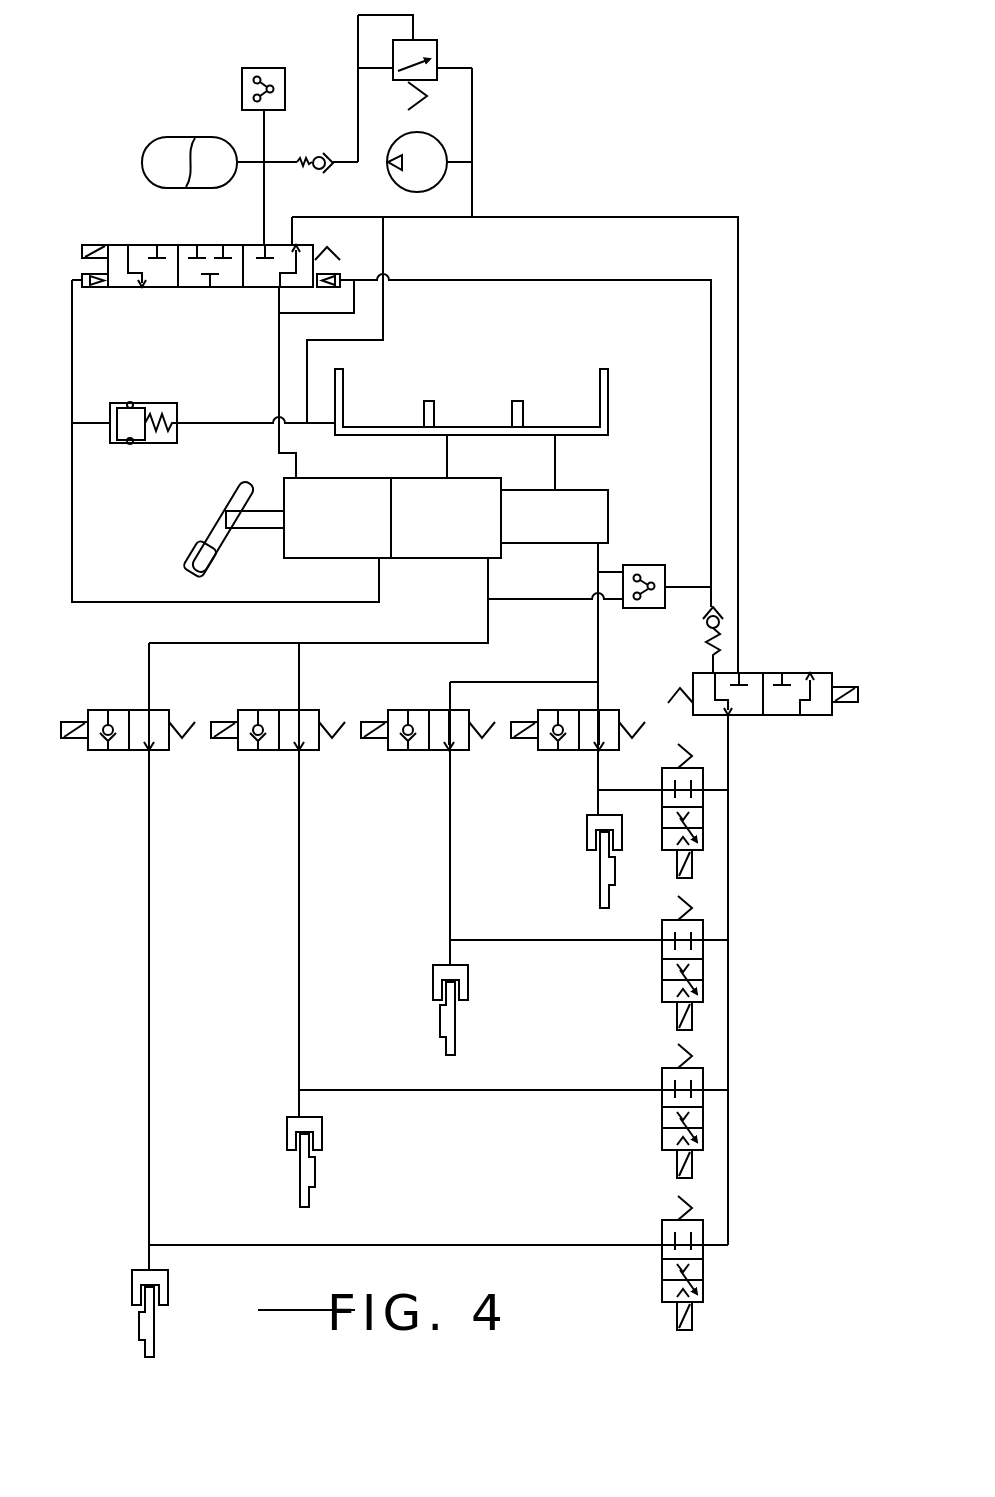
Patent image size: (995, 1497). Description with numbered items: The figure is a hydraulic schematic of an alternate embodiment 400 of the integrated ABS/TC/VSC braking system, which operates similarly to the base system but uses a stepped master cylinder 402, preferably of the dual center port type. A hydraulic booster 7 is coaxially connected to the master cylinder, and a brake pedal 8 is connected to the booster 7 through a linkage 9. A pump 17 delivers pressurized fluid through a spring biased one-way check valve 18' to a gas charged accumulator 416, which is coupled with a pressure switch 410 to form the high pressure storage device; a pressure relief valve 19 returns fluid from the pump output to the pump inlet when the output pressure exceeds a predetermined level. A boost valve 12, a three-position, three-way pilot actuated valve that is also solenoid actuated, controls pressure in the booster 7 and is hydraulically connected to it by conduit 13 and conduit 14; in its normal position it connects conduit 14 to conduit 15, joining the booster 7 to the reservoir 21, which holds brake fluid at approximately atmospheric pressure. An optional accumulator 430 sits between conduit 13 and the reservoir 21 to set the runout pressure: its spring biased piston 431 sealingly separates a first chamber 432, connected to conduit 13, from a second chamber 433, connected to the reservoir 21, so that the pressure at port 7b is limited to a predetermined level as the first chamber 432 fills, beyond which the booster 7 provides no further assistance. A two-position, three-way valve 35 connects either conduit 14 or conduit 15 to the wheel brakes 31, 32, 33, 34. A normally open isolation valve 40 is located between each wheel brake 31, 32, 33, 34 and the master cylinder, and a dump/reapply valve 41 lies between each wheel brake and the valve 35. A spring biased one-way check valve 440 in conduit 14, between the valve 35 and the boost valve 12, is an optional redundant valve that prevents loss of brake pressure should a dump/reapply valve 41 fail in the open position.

The alternate embodiment of the braking system 400 is at (626, 160).
The pressure switch 410 is at (292, 32).
The gas charged accumulator 416 is at (181, 137).
The pressure relief valve 19 is at (437, 50).
The spring biased one-way check valve 18' is at (327, 134).
The pump 17 is at (423, 133).
The boost valve 12 is at (143, 245).
The conduit 13 is at (72, 507).
The conduit 14 is at (279, 331).
The conduit 15 is at (740, 390).
The reservoir 21 is at (612, 393).
The stepped master cylinder 402 is at (573, 497).
The hydraulic booster 7 is at (314, 552).
The port 7b is at (380, 558).
The linkage 9 is at (255, 528).
The brake pedal 8 is at (190, 556).
The accumulator 430 is at (132, 444).
The spring biased piston 431 is at (133, 403).
The first chamber 432 is at (115, 402).
The second chamber 433 is at (178, 412).
The spring biased one-way check valve 440 is at (728, 607).
The 2-position, 3-way valve 35 is at (778, 717).
The isolation valve 40 is at (100, 752).
The dump/reapply valve 41 is at (660, 838).
The wheel brake 31 is at (132, 1280).
The wheel brake 32 is at (322, 1133).
The wheel brake 33 is at (433, 983).
The wheel brake 34 is at (586, 828).